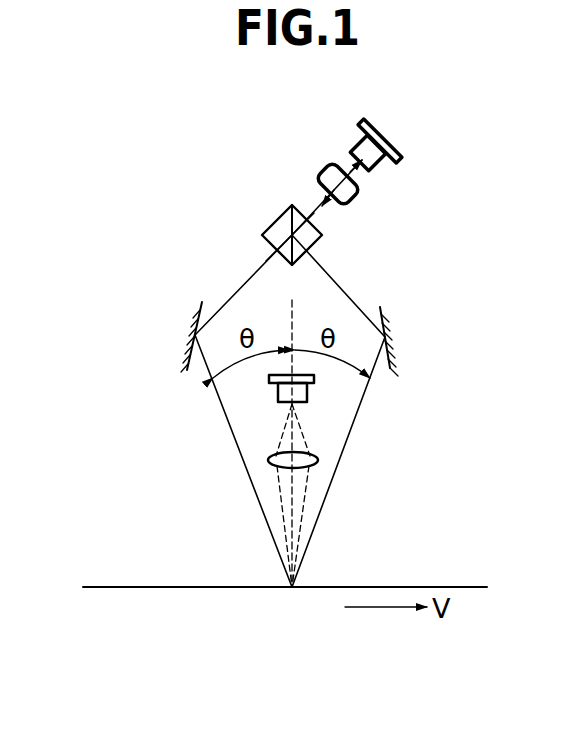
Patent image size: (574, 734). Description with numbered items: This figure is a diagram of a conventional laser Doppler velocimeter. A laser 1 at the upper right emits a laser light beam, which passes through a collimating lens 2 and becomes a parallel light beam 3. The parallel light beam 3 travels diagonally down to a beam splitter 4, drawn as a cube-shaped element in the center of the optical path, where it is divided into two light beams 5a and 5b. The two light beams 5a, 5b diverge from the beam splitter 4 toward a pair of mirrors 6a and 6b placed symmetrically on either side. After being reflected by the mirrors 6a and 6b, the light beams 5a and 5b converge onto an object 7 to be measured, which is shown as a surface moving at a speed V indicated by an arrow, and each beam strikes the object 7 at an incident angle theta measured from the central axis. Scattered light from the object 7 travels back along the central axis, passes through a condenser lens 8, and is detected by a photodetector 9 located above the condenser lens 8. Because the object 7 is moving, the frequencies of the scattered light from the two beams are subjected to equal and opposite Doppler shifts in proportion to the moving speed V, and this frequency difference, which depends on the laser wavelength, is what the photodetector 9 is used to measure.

The laser 1 is at (362, 140).
The collimating lens 2 is at (333, 163).
The parallel light beam 3 is at (313, 196).
The beam splitter 4 is at (268, 228).
The light beam 5a is at (248, 282).
The light beam 5b is at (335, 283).
The mirror 6a is at (202, 303).
The mirror 6b is at (382, 308).
The object 7 is at (139, 587).
The condenser lens 8 is at (275, 461).
The photodetector 9 is at (276, 393).